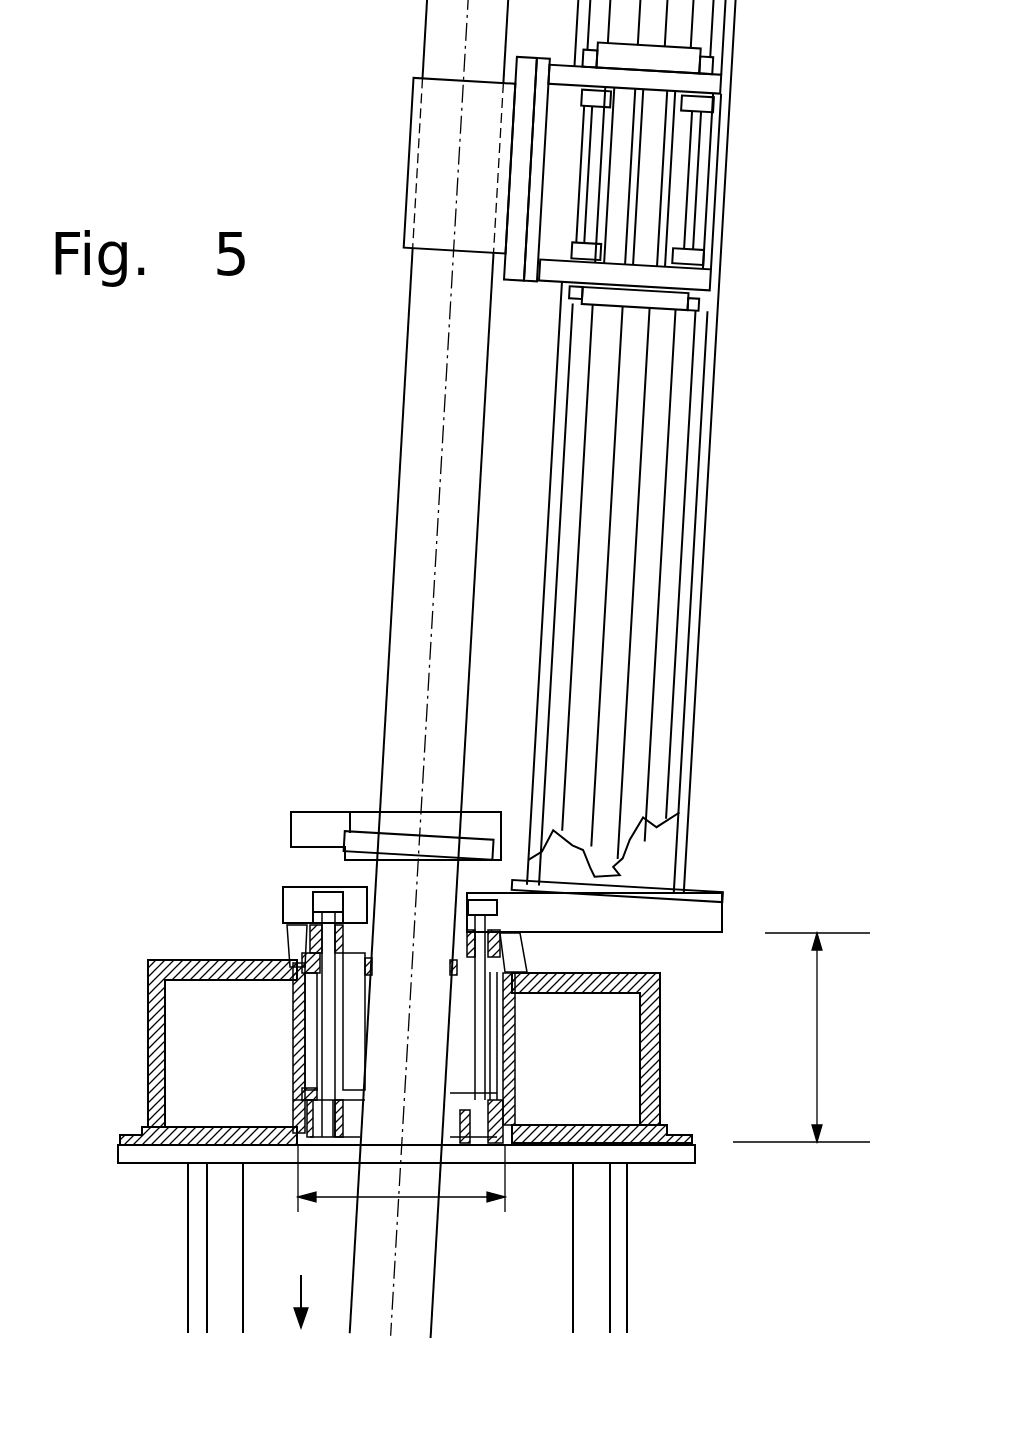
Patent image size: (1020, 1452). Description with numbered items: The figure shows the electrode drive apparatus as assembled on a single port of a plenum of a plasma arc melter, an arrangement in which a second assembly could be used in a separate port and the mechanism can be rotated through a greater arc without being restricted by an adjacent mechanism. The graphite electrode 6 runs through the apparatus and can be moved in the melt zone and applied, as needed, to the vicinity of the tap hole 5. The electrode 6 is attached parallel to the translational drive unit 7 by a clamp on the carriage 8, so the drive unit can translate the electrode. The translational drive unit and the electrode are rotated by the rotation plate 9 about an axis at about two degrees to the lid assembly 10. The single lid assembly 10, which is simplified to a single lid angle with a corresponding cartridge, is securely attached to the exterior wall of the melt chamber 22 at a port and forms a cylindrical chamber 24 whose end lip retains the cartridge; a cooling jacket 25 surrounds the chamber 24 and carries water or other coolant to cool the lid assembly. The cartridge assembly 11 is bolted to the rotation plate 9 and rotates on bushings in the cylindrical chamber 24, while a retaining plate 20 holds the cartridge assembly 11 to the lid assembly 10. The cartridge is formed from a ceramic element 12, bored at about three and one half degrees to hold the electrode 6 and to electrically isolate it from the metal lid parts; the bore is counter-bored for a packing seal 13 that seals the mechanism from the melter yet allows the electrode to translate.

The tap hole 5 is at (628, 1248).
The electrode 6 is at (397, 500).
The translational drive unit 7 is at (718, 454).
The carriage 8 is at (408, 181).
The rotation plate 9 is at (297, 888).
The lid assembly 10 is at (816, 1070).
The cartridge assembly 11 is at (417, 1197).
The ceramic element 12 is at (345, 1056).
The packing seal 13 is at (365, 972).
The retaining plate 20 is at (528, 944).
The melt chamber 22 is at (302, 1284).
The cylindrical chamber 24 is at (515, 1058).
The cooling jacket 25 is at (612, 1022).